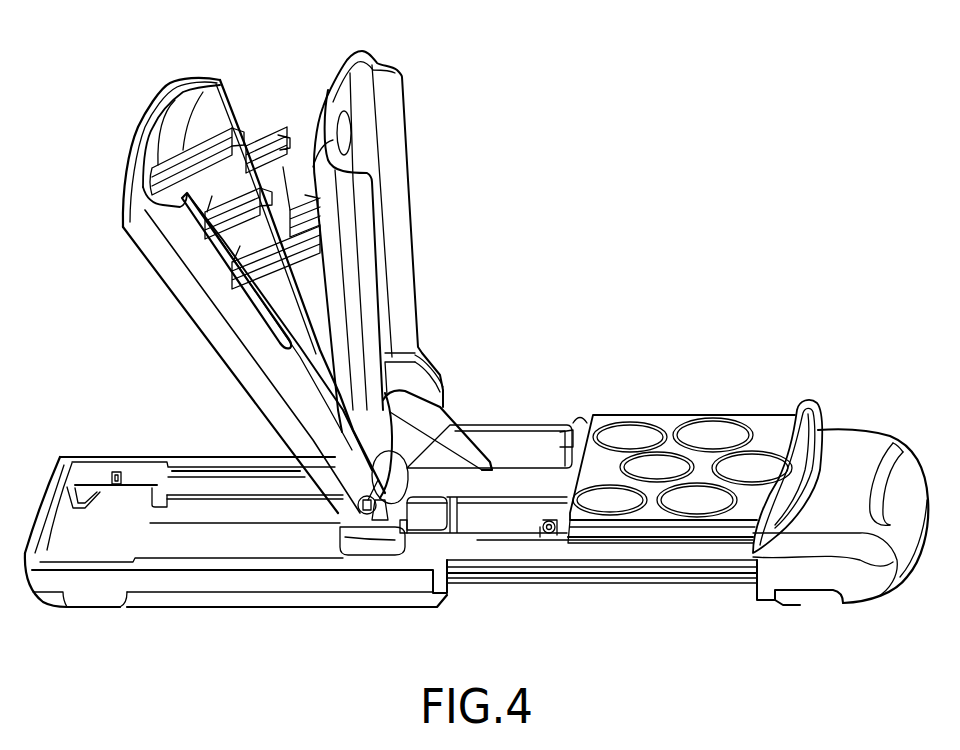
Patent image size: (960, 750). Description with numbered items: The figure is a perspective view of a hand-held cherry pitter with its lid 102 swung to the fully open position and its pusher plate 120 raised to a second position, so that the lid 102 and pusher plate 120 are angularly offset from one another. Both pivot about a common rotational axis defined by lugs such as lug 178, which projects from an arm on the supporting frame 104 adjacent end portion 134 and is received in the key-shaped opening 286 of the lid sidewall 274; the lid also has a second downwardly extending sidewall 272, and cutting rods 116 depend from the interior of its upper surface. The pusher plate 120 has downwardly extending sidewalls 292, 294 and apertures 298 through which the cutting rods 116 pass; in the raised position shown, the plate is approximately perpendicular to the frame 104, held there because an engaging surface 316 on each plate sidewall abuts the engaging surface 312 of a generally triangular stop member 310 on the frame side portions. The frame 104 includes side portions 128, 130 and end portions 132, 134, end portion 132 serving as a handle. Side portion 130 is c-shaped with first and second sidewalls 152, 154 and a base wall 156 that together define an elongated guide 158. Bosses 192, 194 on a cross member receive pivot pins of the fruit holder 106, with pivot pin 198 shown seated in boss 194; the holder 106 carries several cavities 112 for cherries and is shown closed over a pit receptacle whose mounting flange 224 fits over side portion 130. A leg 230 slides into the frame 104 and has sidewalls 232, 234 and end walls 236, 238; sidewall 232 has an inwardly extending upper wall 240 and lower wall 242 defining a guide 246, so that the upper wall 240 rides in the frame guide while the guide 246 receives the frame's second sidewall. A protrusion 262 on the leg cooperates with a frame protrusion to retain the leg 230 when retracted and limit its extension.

The lid 102 is at (182, 287).
The supporting frame 104 is at (810, 573).
The fruit holder 106 is at (670, 418).
The cavity 112 is at (730, 425).
The cutting rod 116 is at (277, 92).
The pusher plate 120 is at (393, 170).
The side portion 128 is at (528, 443).
The side portion 130 is at (635, 570).
The end portion 132 is at (860, 440).
The end portion 134 is at (362, 522).
The first sidewall 152 is at (540, 560).
The second sidewall 154 is at (678, 570).
The base wall 156 is at (602, 570).
The guide 158 is at (567, 573).
The lug 178 is at (365, 528).
The boss 192 is at (583, 417).
The boss 194 is at (546, 530).
The pivot pin 198 is at (546, 517).
The mounting flange 224 is at (732, 543).
The leg 230 is at (225, 605).
The sidewall 232 is at (135, 463).
The sidewall 234 is at (283, 605).
The end wall 236 is at (50, 497).
The end wall 238 is at (478, 510).
The upper wall 240 is at (230, 466).
The lower wall 242 is at (233, 497).
The guide 246 is at (182, 480).
The protrusion 262 is at (117, 484).
The sidewall 272 is at (227, 102).
The sidewall 274 is at (207, 337).
The key-shaped opening 286 is at (388, 470).
The sidewall 292 is at (360, 297).
The sidewall 294 is at (400, 247).
The aperture 298 is at (347, 135).
The stop member 310 is at (415, 523).
The engaging surface 312 is at (413, 513).
The engaging surface 316 is at (387, 523).